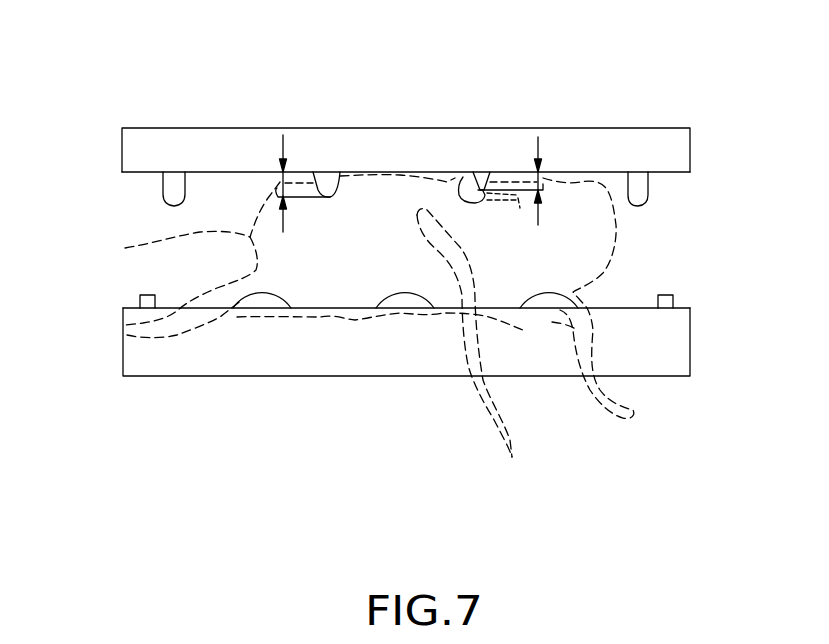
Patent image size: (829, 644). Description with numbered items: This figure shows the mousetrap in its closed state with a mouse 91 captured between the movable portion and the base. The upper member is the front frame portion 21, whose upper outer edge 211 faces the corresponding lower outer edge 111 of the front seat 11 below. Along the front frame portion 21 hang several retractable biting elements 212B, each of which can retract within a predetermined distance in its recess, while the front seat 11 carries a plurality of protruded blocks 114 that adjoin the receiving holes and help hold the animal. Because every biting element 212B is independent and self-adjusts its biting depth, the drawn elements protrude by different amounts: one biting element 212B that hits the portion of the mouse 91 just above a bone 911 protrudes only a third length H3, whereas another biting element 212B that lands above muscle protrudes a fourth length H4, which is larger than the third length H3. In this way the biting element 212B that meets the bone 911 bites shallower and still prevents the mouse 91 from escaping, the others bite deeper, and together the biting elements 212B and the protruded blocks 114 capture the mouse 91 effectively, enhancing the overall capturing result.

The front frame portion 21 is at (640, 134).
The upper outer edge 211 is at (677, 172).
The biting element 212B is at (328, 190).
The bone 911 is at (453, 177).
The mouse 91 is at (358, 316).
The front seat 11 is at (663, 349).
The lower outer edge 111 is at (685, 308).
The protruded blocks 114 is at (140, 298).
The third length H3 is at (543, 186).
The fourth length H4 is at (278, 188).